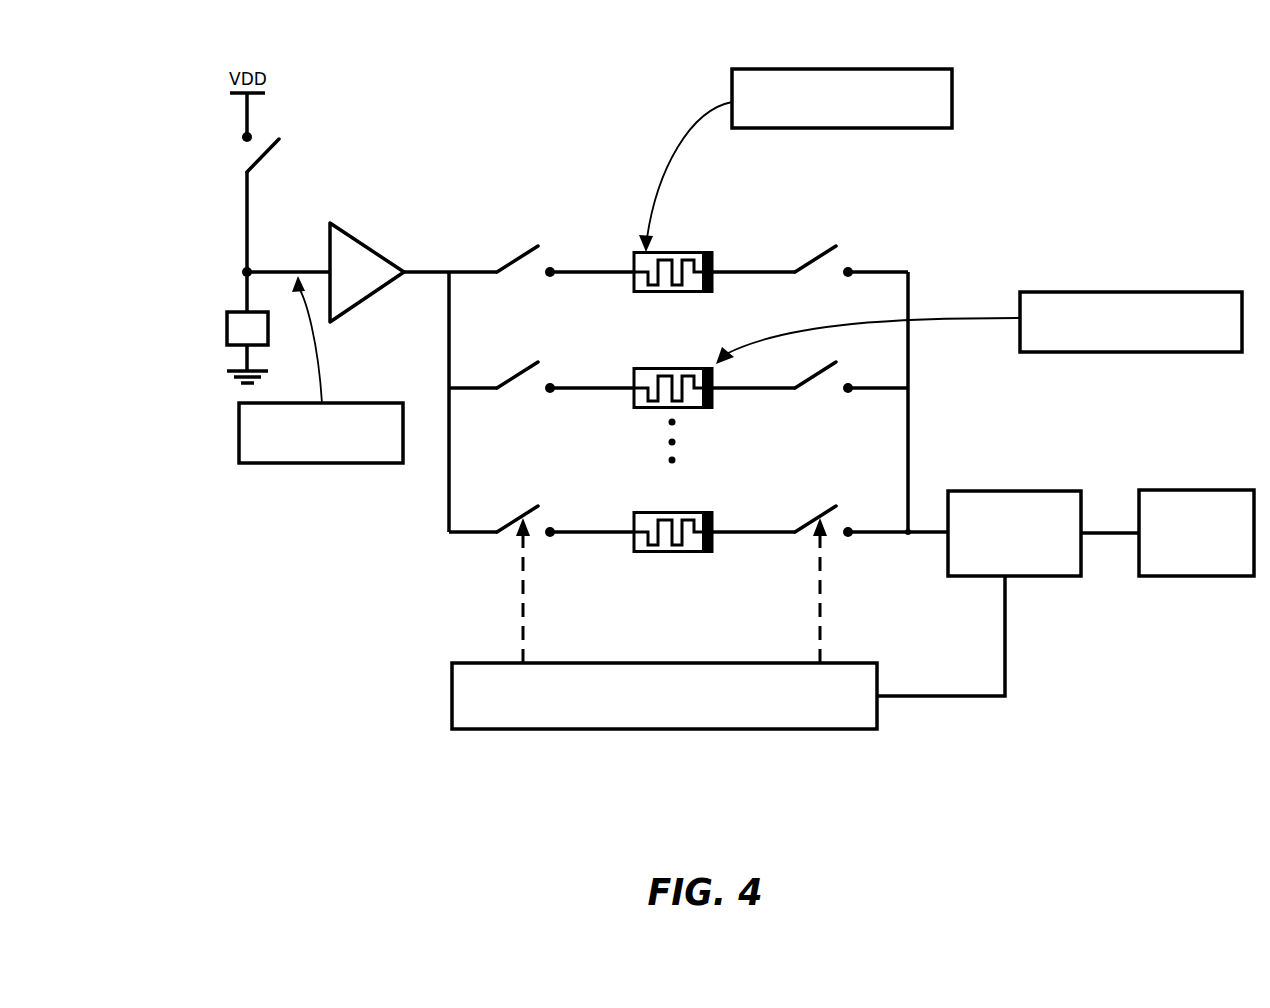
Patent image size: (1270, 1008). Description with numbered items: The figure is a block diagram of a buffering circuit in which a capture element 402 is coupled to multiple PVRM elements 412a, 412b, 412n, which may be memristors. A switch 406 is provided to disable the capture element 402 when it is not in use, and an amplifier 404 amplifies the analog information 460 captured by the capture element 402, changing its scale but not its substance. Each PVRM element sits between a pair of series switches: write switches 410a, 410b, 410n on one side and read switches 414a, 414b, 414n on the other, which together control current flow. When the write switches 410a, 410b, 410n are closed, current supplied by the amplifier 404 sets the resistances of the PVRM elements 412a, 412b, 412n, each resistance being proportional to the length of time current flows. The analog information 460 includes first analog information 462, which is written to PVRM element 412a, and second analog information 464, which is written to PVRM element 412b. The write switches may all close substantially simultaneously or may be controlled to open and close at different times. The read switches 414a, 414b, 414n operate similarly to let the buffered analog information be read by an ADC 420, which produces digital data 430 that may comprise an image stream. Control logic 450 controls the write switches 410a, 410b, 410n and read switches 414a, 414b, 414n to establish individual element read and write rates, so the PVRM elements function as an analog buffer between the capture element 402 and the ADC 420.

The capture element 402 is at (227, 328).
The amplifier 404 is at (328, 240).
The switch 406 is at (268, 157).
The write switch 410a is at (520, 252).
The write switch 410b is at (520, 368).
The write switch 410n is at (522, 512).
The PVRM element 412a is at (672, 253).
The PVRM element 412b is at (663, 368).
The PVRM element 412n is at (672, 512).
The read switch 414a is at (812, 252).
The read switch 414b is at (812, 368).
The read switch 414n is at (812, 512).
The ADC 420 is at (1012, 491).
The digital data 430 is at (1194, 490).
The control logic 450 is at (655, 663).
The analog information 460 is at (320, 463).
The first analog information 462 is at (840, 68).
The second analog information 464 is at (1130, 292).